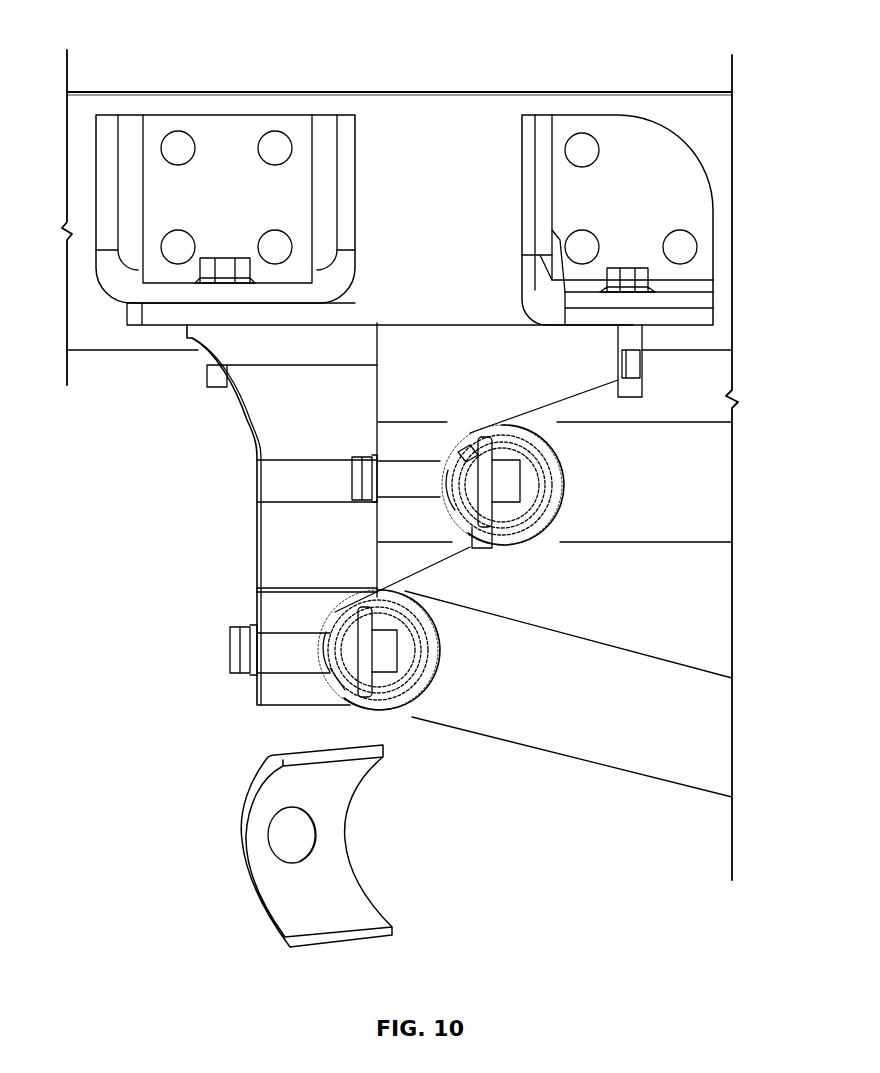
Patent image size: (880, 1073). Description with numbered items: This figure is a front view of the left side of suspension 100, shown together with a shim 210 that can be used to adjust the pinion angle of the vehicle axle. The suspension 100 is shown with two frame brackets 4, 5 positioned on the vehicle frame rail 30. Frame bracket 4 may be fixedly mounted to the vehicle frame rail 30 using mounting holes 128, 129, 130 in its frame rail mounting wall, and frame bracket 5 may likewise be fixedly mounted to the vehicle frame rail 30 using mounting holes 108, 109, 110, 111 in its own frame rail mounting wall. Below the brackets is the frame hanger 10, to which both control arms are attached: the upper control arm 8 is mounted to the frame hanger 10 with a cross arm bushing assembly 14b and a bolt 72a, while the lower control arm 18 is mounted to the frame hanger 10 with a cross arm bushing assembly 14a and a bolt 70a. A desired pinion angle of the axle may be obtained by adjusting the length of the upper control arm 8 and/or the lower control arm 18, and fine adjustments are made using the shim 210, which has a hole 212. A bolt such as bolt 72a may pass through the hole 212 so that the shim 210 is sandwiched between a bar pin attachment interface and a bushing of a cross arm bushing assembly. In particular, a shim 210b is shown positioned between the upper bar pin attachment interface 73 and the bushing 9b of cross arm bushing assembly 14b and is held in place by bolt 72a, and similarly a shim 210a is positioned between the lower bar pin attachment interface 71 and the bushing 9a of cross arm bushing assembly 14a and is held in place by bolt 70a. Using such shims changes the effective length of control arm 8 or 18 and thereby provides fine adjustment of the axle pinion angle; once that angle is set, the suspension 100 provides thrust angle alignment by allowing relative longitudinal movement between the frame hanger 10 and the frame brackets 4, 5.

The suspension 100 is at (503, 72).
The vehicle frame rail 30 is at (418, 125).
The frame bracket 5 is at (336, 244).
The frame bracket 4 is at (656, 220).
The mounting hole 108 is at (178, 138).
The mounting hole 109 is at (276, 140).
The mounting hole 110 is at (176, 255).
The mounting hole 111 is at (280, 245).
The mounting hole 128 is at (582, 145).
The mounting hole 129 is at (685, 245).
The mounting hole 130 is at (585, 245).
The frame hanger 10 is at (312, 514).
The upper control arm 8 is at (665, 498).
The lower control arm 18 is at (683, 755).
The cross arm bushing assembly 14a is at (342, 694).
The cross arm bushing assembly 14b is at (481, 486).
The bushing 9a is at (350, 680).
The bushing 9b is at (478, 493).
The bolt 70a is at (230, 640).
The lower bar pin attachment interface 71 is at (340, 677).
The bolt 72a is at (355, 478).
The upper bar pin attachment interface 73 is at (468, 452).
The shim 210 is at (322, 849).
The shim 210a is at (348, 632).
The shim 210b is at (465, 492).
The hole 212 is at (297, 842).